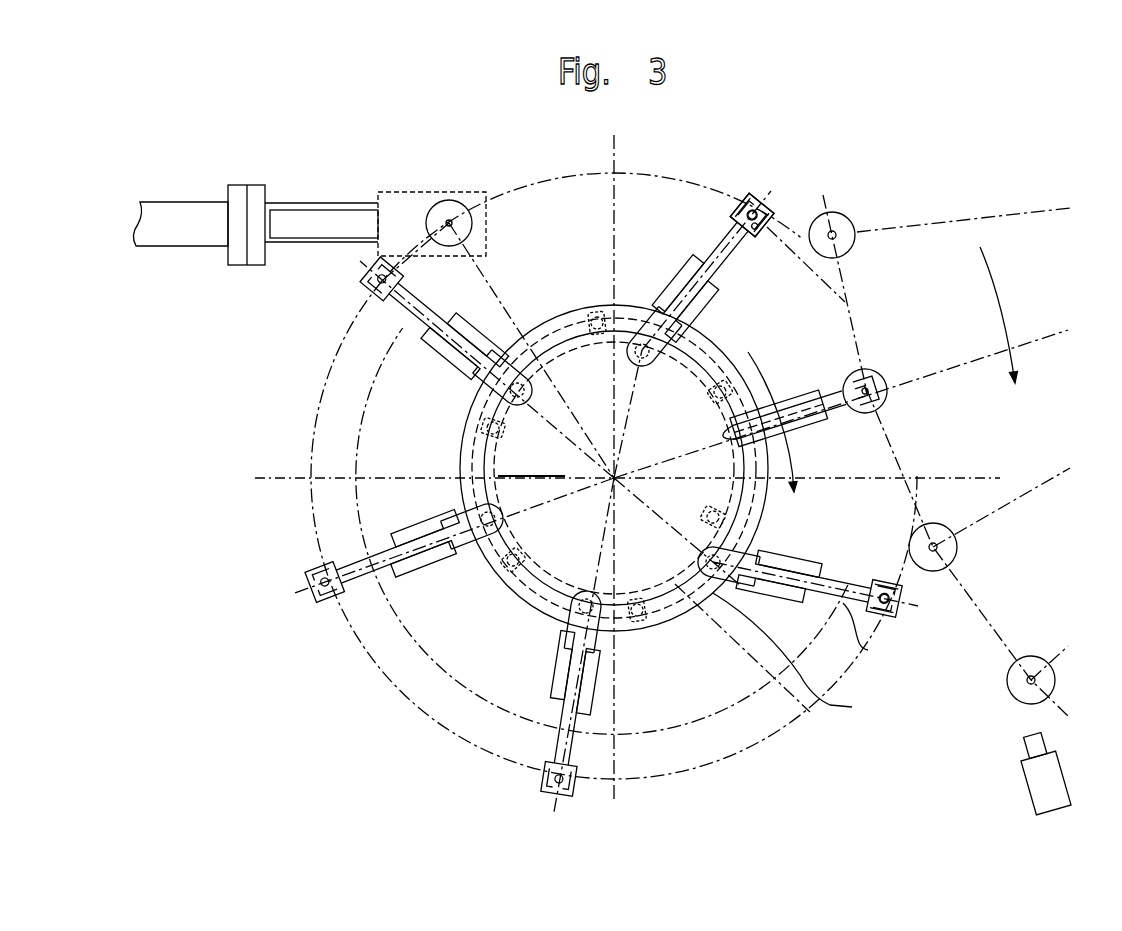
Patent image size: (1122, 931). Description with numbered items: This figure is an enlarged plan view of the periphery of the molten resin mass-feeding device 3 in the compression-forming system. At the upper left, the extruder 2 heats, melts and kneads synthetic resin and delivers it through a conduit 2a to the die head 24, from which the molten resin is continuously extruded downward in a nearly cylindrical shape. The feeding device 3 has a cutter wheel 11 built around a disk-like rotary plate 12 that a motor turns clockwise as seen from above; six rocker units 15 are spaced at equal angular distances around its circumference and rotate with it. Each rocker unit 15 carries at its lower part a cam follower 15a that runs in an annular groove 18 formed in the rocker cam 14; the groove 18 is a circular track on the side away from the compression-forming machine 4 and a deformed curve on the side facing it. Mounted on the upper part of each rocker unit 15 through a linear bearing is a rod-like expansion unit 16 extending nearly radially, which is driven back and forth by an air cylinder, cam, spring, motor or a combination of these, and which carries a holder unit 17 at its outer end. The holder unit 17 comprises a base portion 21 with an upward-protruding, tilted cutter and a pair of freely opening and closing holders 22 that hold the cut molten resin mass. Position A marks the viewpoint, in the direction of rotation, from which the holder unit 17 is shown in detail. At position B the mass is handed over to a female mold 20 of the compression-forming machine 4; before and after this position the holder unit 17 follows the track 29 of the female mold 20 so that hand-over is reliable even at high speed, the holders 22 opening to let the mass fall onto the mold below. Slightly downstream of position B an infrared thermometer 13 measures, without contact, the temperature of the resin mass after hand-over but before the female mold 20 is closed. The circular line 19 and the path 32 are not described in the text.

The extruder 2 is at (733, 205).
The conduit 2a is at (312, 220).
The molten resin mass-feeding device 3 is at (277, 428).
The compression-forming machine 4 is at (1050, 258).
The cutter wheel 11 is at (478, 400).
The rotary plate 12 is at (796, 657).
The infrared thermometer 13 is at (1036, 788).
The rocker cam 14 is at (812, 714).
The rocker unit 15 is at (792, 562).
The cam follower 15a is at (496, 435).
The expansion unit 16 is at (870, 624).
The holder unit 17 is at (763, 193).
The annular groove 18 is at (764, 504).
The rotation trajectory 19 is at (318, 378).
The female mold 20 is at (857, 222).
The base portion 21 is at (762, 228).
The holders 22 is at (755, 193).
The die head 24 is at (452, 202).
The track 29 is at (993, 630).
The guide path 32 is at (892, 452).
The position A is at (494, 228).
The position B is at (878, 360).